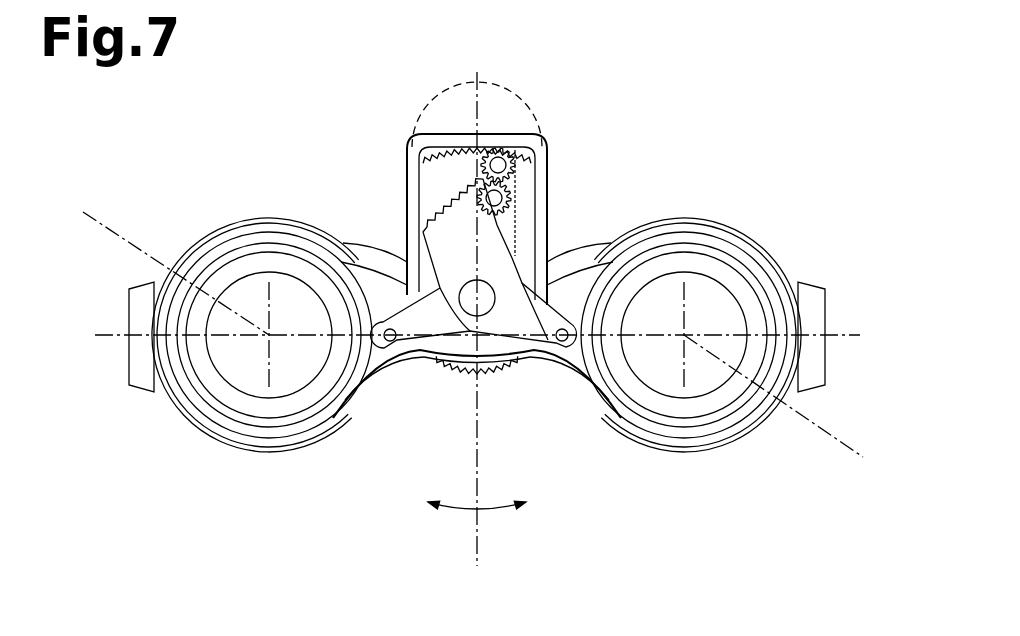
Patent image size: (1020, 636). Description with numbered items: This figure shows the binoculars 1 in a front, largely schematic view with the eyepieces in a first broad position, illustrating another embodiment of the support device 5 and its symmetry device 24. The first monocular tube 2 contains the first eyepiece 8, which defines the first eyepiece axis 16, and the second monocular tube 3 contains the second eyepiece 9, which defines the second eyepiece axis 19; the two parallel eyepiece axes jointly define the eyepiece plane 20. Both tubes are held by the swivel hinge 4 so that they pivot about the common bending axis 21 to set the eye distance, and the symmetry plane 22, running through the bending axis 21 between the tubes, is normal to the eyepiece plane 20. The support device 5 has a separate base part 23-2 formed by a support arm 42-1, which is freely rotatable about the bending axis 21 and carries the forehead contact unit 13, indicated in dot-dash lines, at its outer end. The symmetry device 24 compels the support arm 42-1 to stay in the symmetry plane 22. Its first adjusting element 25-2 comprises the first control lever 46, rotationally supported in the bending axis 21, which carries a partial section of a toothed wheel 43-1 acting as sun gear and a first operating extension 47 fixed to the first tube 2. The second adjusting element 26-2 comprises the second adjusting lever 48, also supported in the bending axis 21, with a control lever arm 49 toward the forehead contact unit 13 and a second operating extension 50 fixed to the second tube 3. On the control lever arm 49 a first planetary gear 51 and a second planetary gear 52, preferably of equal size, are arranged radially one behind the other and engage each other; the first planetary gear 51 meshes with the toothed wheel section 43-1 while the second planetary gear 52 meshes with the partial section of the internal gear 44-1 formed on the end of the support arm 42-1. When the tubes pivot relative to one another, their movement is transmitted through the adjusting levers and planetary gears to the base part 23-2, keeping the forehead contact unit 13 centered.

The binoculars 1 is at (808, 78).
The first monocular tube 2 is at (822, 248).
The second monocular tube 3 is at (210, 212).
The swivel hinge 4 is at (489, 390).
The support device 5 is at (680, 97).
The first eyepiece 8 is at (773, 437).
The second eyepiece 9 is at (202, 460).
The forehead contact unit 13 is at (507, 105).
The first eyepiece axis 16 is at (790, 406).
The second eyepiece axis 19 is at (156, 257).
The eyepiece plane 20 is at (112, 335).
The bending axis 21 is at (460, 347).
The symmetry plane 22 is at (478, 553).
The base part 23-2 is at (540, 143).
The symmetry device 24 is at (587, 162).
The first adjusting element 25-2 is at (553, 235).
The second adjusting element 26-2 is at (438, 190).
The support arm 42-1 is at (530, 178).
The partial section of toothed wheel 43-1 is at (413, 220).
The partial section of internal gear 44-1 is at (440, 164).
The first control lever 46 is at (512, 240).
The first operating extension 47 is at (533, 323).
The second adjusting lever 48 is at (438, 210).
The control lever arm 49 is at (483, 205).
The second operating extension 50 is at (420, 347).
The first planetary gear 51 is at (517, 200).
The second planetary gear 52 is at (540, 165).